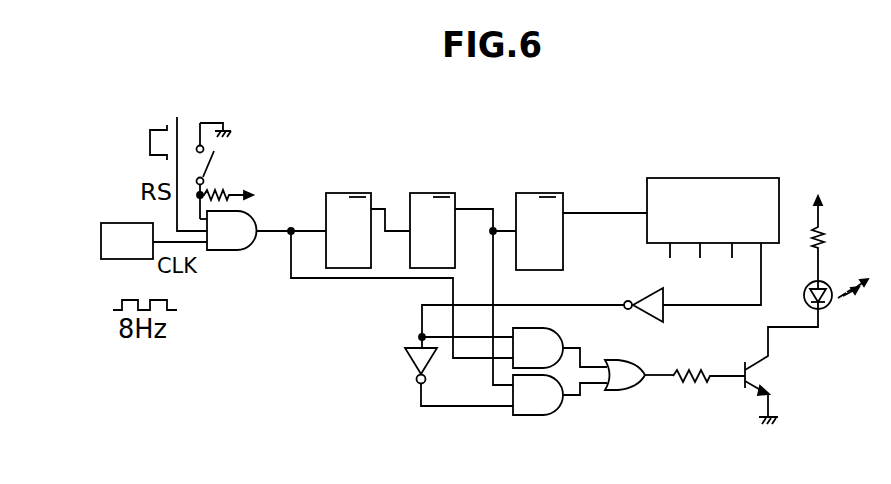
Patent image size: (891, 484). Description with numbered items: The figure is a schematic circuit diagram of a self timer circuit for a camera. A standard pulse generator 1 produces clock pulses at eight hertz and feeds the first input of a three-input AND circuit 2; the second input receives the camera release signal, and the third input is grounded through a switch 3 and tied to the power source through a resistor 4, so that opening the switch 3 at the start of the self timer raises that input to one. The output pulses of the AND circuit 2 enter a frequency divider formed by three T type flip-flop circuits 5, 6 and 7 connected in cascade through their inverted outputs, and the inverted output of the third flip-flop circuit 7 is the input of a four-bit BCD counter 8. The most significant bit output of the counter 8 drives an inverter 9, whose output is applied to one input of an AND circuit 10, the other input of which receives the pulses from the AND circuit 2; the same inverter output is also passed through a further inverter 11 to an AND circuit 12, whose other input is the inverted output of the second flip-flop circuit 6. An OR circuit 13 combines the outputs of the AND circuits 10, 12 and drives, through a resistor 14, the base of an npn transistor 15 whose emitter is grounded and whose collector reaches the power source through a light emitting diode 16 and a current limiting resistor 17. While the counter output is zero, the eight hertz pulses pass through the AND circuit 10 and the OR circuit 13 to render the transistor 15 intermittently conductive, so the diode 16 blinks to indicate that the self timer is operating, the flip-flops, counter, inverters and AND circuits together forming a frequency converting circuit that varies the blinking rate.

The standard pulse generator 1 is at (102, 228).
The AND circuit 2 is at (232, 246).
The switch 3 is at (214, 160).
The resistor 4 is at (228, 193).
The first flip-flop circuit 5 is at (344, 194).
The second flip-flop circuit 6 is at (427, 194).
The third flip-flop circuit 7 is at (537, 194).
The 4-bit BCD counter 8 is at (732, 182).
The inverter 9 is at (639, 316).
The AND circuit 10 is at (547, 336).
The inverter 11 is at (411, 362).
The AND circuit 12 is at (542, 408).
The OR circuit 13 is at (621, 391).
The resistor 14 is at (693, 385).
The npn transistor 15 is at (744, 381).
The light emitting diode 16 is at (823, 312).
The current limiting resistor 17 is at (826, 242).